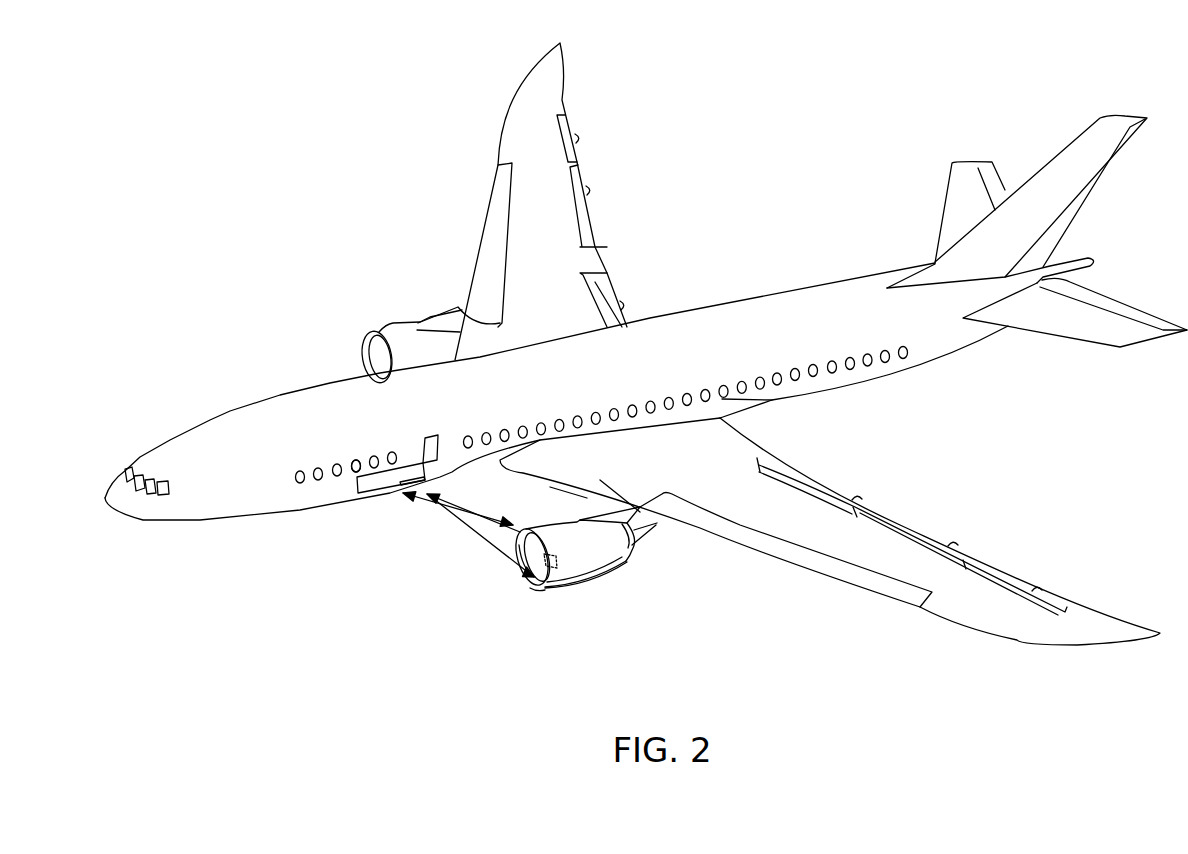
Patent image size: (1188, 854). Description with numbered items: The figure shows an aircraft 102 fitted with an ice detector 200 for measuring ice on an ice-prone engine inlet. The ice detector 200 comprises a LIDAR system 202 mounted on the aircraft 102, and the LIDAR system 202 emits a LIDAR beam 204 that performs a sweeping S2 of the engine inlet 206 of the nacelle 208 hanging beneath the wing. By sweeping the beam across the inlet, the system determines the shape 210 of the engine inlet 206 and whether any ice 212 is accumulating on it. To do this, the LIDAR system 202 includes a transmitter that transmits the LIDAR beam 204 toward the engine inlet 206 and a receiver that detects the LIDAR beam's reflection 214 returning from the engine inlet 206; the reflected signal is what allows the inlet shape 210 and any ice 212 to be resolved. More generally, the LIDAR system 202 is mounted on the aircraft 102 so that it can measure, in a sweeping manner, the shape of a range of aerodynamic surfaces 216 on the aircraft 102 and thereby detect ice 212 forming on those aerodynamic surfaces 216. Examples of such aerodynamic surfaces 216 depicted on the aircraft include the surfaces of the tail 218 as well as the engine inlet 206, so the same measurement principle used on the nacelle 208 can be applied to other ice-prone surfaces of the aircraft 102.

The aircraft 102 is at (385, 247).
The ice detector 200 is at (357, 492).
The LIDAR system 202 is at (352, 448).
The LIDAR beam 204 is at (460, 535).
The engine inlet 206 is at (533, 588).
The nacelle 208 is at (597, 594).
The shape 210 is at (534, 605).
The ice 212 is at (409, 500).
The LIDAR beam's reflection 214 is at (550, 487).
The aerodynamic surfaces 216 is at (1093, 138).
The tail 218 is at (1037, 193).
The sweeping S2 is at (587, 498).